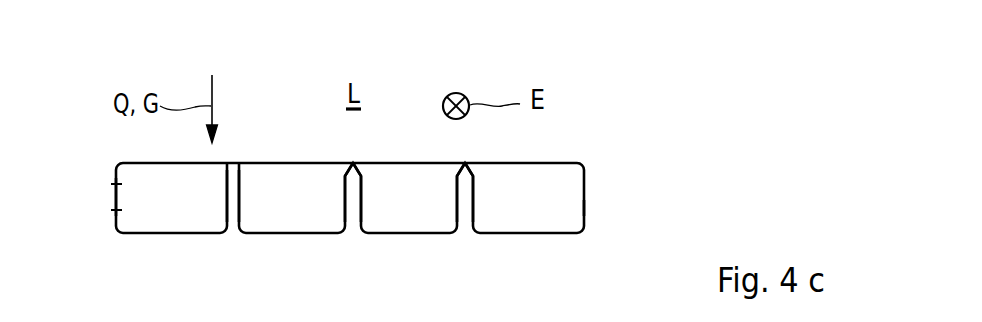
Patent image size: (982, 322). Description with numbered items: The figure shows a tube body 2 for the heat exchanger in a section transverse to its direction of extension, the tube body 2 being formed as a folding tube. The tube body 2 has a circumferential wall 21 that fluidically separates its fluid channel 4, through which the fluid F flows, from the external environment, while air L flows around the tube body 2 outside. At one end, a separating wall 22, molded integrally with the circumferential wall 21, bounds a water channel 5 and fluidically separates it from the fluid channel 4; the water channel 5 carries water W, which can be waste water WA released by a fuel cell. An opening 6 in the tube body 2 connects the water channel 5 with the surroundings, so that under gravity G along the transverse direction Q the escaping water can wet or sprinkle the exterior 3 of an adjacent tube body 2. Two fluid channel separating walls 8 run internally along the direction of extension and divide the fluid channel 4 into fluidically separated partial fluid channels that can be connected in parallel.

The tube body 2 is at (646, 137).
The exterior 3 is at (586, 208).
The fluid channel 4 is at (325, 211).
The water channel 5 is at (224, 211).
The opening 6 is at (114, 194).
The fluid channel separating wall 8 is at (353, 215).
The circumferential wall 21 is at (596, 183).
The separating wall 22 is at (234, 215).